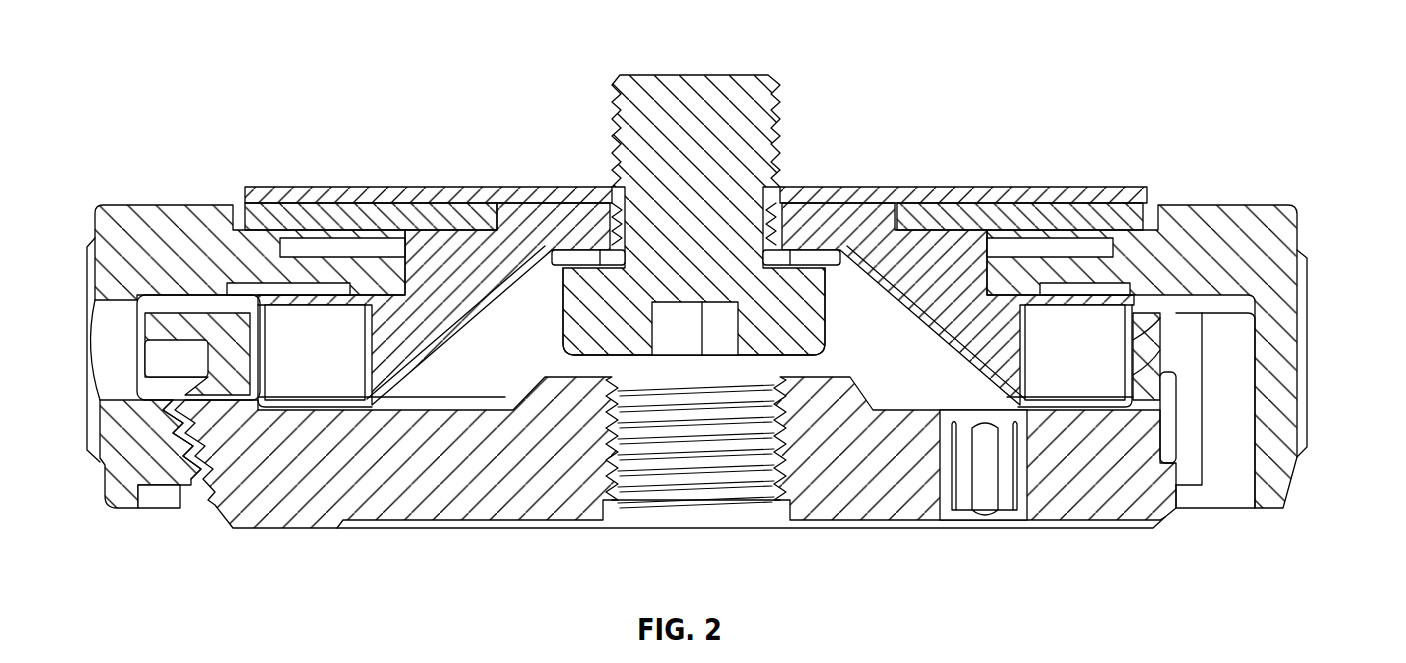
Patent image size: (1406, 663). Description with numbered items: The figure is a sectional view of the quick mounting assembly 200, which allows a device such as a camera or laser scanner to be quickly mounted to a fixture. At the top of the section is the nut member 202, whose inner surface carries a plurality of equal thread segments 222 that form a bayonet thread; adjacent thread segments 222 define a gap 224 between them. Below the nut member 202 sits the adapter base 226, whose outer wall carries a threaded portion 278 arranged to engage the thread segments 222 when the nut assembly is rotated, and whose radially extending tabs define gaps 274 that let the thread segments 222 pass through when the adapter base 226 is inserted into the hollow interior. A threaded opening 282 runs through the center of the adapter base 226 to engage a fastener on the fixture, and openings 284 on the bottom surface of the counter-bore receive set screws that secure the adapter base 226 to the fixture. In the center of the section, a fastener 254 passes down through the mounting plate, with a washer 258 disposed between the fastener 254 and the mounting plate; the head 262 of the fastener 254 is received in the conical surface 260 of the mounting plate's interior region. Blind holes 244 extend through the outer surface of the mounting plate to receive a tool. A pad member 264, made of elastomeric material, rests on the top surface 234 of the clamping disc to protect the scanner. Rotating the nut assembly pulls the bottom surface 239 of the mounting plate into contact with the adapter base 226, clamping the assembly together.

The quick mounting assembly 200 is at (1218, 62).
The nut member 202 is at (1302, 220).
The thread segments 222 is at (120, 465).
The gap 224 is at (1235, 480).
The adapter base 226 is at (327, 532).
The top surface 234 is at (278, 210).
The bottom surface 239 is at (303, 410).
The hole 244 is at (345, 343).
The fastener 254 is at (700, 76).
The washer 258 is at (808, 262).
The conical surface 260 is at (462, 325).
The head 262 is at (832, 323).
The pad member 264 is at (1040, 190).
The gaps 274 is at (1185, 487).
The threaded portion 278 is at (200, 455).
The threaded opening 282 is at (680, 455).
The openings 284 is at (982, 497).